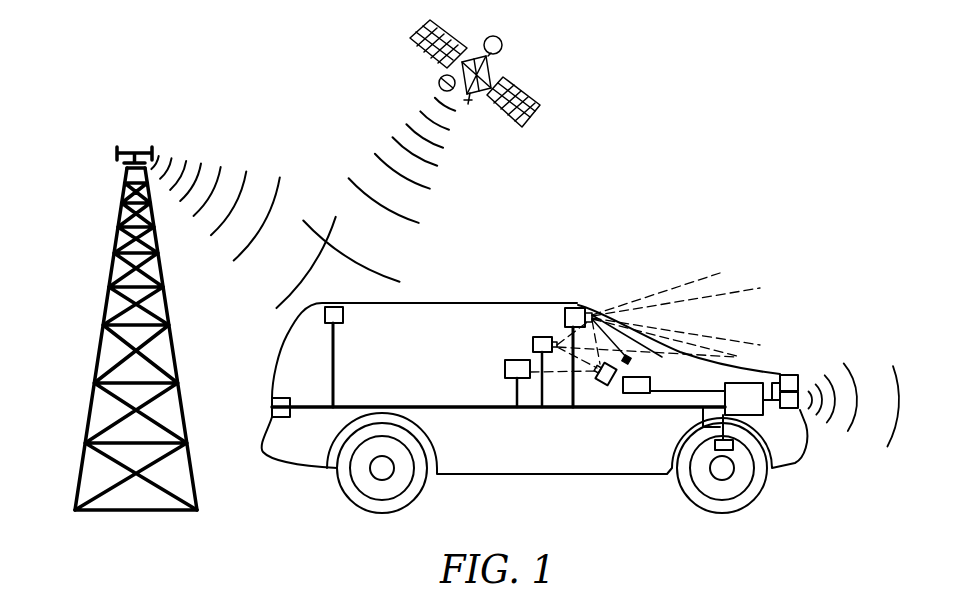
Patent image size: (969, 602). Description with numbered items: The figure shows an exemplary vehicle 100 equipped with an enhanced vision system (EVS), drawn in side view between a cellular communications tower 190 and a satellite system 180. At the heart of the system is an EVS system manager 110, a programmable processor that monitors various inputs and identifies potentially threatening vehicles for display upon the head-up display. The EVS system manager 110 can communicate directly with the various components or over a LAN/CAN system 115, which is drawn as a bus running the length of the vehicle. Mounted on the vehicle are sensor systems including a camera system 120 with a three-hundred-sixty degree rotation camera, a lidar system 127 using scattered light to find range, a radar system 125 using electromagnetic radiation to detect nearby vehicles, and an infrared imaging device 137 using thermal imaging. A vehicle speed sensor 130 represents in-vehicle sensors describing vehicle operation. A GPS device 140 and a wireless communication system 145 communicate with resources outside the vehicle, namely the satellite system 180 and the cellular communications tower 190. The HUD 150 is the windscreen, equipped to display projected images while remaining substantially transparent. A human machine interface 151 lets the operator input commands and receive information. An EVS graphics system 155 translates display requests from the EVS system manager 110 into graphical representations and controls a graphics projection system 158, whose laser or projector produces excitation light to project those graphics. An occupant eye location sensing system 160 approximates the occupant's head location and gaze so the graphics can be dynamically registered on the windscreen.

The vehicle 100 is at (498, 303).
The EVS system manager 110 is at (756, 410).
The LAN/CAN system 115 is at (365, 403).
The camera system 120 is at (575, 308).
The radar system 125 is at (798, 398).
The lidar system 127 is at (790, 376).
The vehicle speed sensor 130 is at (758, 465).
The infrared (IR) imaging device 137 is at (540, 337).
The GPS device 140 is at (272, 408).
The wireless communication system 145 is at (325, 315).
The head-up display (HUD) 150 is at (647, 348).
The human machine interface (HMI) 151 is at (505, 366).
The EVS graphics system 155 is at (637, 393).
The graphics projection system 158 is at (628, 357).
The occupant eye location sensing system 160 is at (603, 384).
The satellite system 180 is at (442, 80).
The cellular communications tower 190 is at (107, 293).